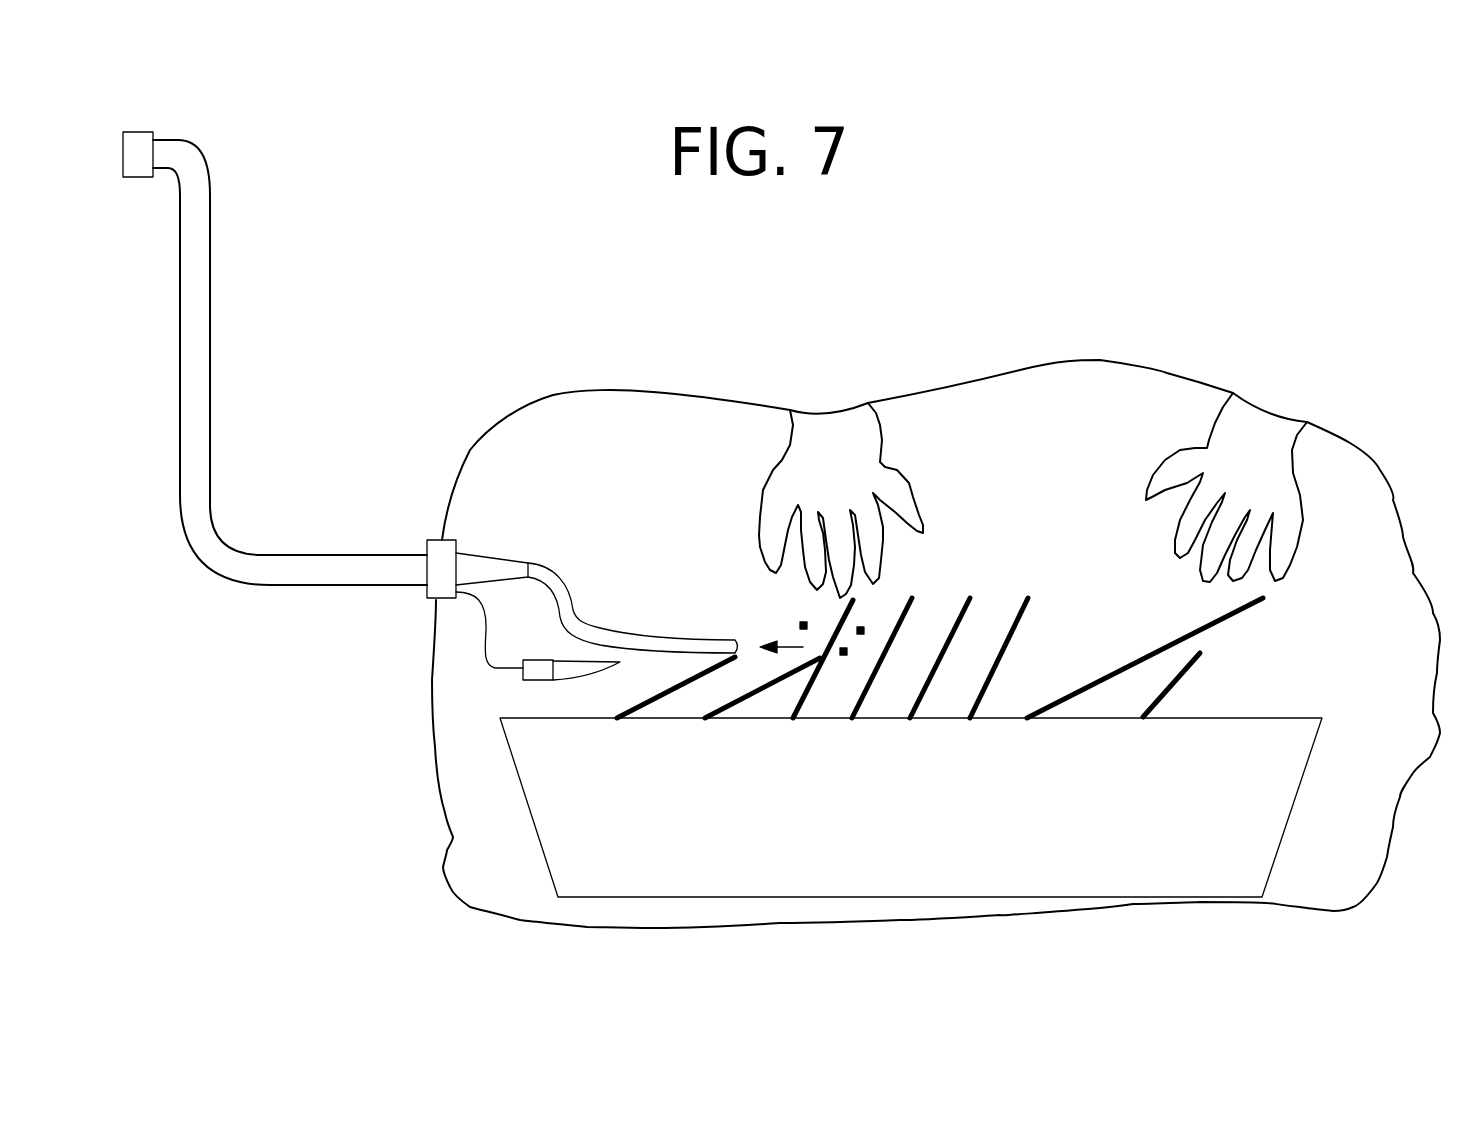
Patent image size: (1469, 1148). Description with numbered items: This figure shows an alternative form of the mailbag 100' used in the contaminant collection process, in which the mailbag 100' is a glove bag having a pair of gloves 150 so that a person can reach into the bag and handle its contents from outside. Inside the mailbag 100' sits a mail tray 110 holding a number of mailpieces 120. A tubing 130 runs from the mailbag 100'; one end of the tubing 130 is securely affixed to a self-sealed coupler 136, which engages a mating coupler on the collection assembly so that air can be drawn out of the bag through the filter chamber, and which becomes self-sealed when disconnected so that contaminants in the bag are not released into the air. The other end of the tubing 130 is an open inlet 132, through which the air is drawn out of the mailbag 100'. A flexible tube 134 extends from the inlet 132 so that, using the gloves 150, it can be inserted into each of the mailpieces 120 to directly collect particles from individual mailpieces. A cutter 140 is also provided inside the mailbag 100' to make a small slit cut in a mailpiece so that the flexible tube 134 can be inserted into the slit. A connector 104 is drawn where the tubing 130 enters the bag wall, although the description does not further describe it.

The mailbag 100' is at (936, 628).
The connector 104 is at (440, 568).
The mail tray 110 is at (932, 819).
The mailpieces 120 is at (993, 662).
The tubing 130 is at (210, 303).
The open inlet 132 is at (500, 567).
The flexible tube 134 is at (582, 617).
The self-sealed coupler 136 is at (152, 132).
The cutter 140 is at (573, 670).
The gloves 150 is at (893, 473).